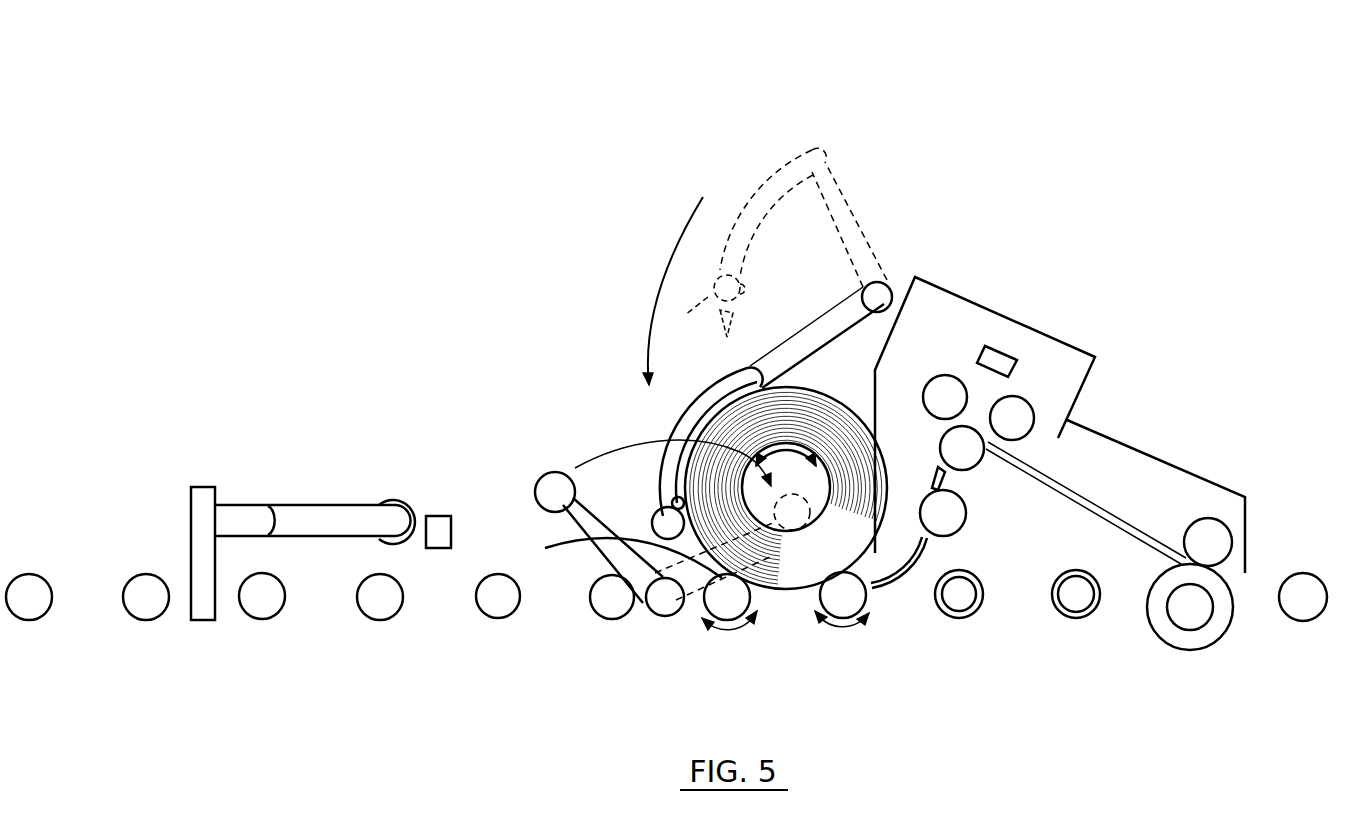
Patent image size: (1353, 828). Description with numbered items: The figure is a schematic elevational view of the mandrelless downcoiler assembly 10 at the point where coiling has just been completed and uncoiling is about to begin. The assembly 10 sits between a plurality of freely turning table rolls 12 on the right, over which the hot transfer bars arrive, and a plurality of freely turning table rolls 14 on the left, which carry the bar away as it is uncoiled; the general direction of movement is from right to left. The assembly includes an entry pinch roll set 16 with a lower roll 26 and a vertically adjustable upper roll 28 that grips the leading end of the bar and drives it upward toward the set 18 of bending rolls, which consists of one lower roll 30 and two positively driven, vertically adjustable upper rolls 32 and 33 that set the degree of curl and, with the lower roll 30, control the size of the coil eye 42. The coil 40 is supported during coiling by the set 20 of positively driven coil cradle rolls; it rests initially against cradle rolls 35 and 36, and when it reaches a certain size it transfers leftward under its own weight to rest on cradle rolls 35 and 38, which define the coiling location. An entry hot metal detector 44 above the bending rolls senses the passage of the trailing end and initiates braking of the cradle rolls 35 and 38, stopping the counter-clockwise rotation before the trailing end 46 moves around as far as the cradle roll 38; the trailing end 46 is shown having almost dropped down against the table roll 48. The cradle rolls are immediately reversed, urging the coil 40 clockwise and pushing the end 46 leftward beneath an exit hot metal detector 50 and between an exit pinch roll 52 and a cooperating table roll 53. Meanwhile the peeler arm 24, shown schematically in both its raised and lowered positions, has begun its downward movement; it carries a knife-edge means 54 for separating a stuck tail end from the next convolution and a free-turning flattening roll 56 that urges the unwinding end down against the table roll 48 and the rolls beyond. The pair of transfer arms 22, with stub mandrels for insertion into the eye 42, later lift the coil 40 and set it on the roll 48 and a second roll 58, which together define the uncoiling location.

The mandrelless downcoiler assembly 10 is at (605, 292).
The table rolls 12 is at (1292, 598).
The table rolls 14 is at (133, 610).
The entry pinch roll set 16 is at (1255, 547).
The set of bending rolls 18 is at (1012, 383).
The set of coil cradle rolls 20 is at (912, 588).
The transfer arms 22 is at (607, 532).
The peeler arm 24 is at (863, 228).
The lower roll 26 is at (1153, 615).
The upper roll 28 is at (1188, 532).
The lower roll 30 is at (975, 450).
The upper roll 32 is at (932, 385).
The upper roll 33 is at (1020, 410).
The cradle roll 35 is at (868, 602).
The cradle roll 36 is at (952, 528).
The third cradle roll 38 is at (748, 613).
The coil 40 is at (835, 428).
The coil eye 42 is at (792, 483).
The entry hot metal detector 44 is at (1003, 357).
The trailing end 46 is at (560, 543).
The table roll 48 is at (607, 607).
The exit hot metal detector 50 is at (443, 518).
The exit pinch roll 52 is at (405, 505).
The table roll 53 is at (397, 602).
The knife-edge means 54 is at (737, 325).
The flattening roll 56 is at (704, 312).
The second roll 58 is at (480, 605).